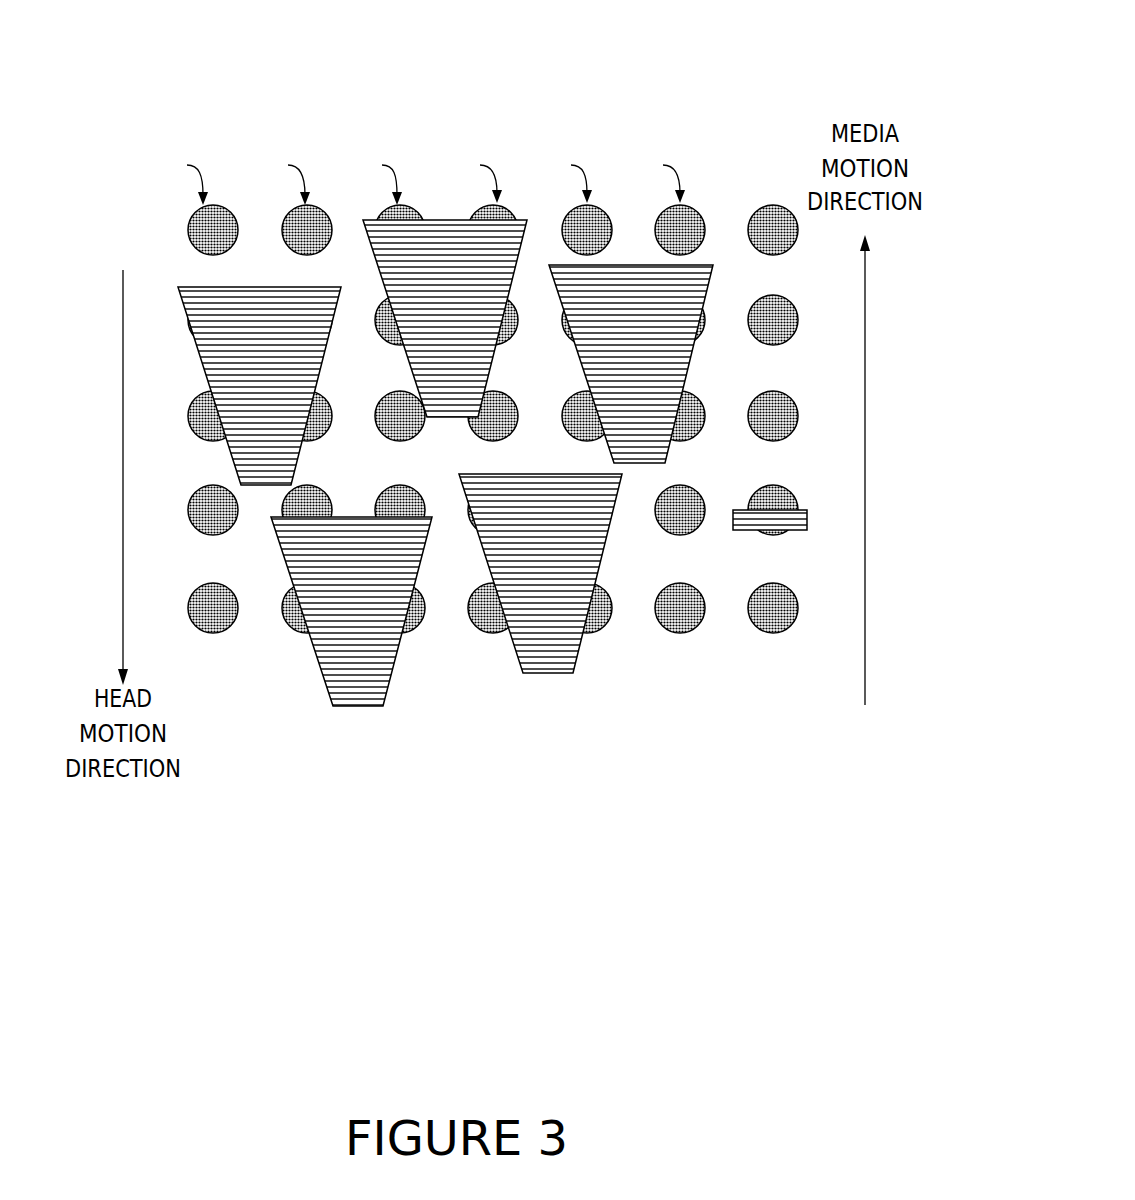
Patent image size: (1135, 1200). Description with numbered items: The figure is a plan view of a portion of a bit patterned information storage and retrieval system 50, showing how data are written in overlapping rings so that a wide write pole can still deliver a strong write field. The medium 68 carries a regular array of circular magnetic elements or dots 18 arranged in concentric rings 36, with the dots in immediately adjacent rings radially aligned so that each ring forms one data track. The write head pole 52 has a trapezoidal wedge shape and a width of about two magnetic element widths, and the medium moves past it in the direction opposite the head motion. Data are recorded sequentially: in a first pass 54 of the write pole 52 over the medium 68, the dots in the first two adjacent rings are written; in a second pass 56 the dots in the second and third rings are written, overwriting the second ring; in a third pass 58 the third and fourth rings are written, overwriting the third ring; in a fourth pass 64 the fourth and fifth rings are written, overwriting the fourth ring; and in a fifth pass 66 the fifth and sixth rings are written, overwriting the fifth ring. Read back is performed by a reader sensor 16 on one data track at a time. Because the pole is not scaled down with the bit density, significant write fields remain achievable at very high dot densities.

The reader sensor 16 is at (796, 552).
The magnetic elements 18 is at (189, 232).
The concentric rings 36 is at (385, 352).
The bit patterned information storage and retrieval system 50 is at (680, 100).
The write head pole 52 is at (241, 474).
The first pass 54 is at (262, 497).
The second pass 56 is at (353, 718).
The third pass 58 is at (437, 429).
The fourth pass 64 is at (549, 685).
The fifth pass 66 is at (650, 475).
The medium 68 is at (733, 207).